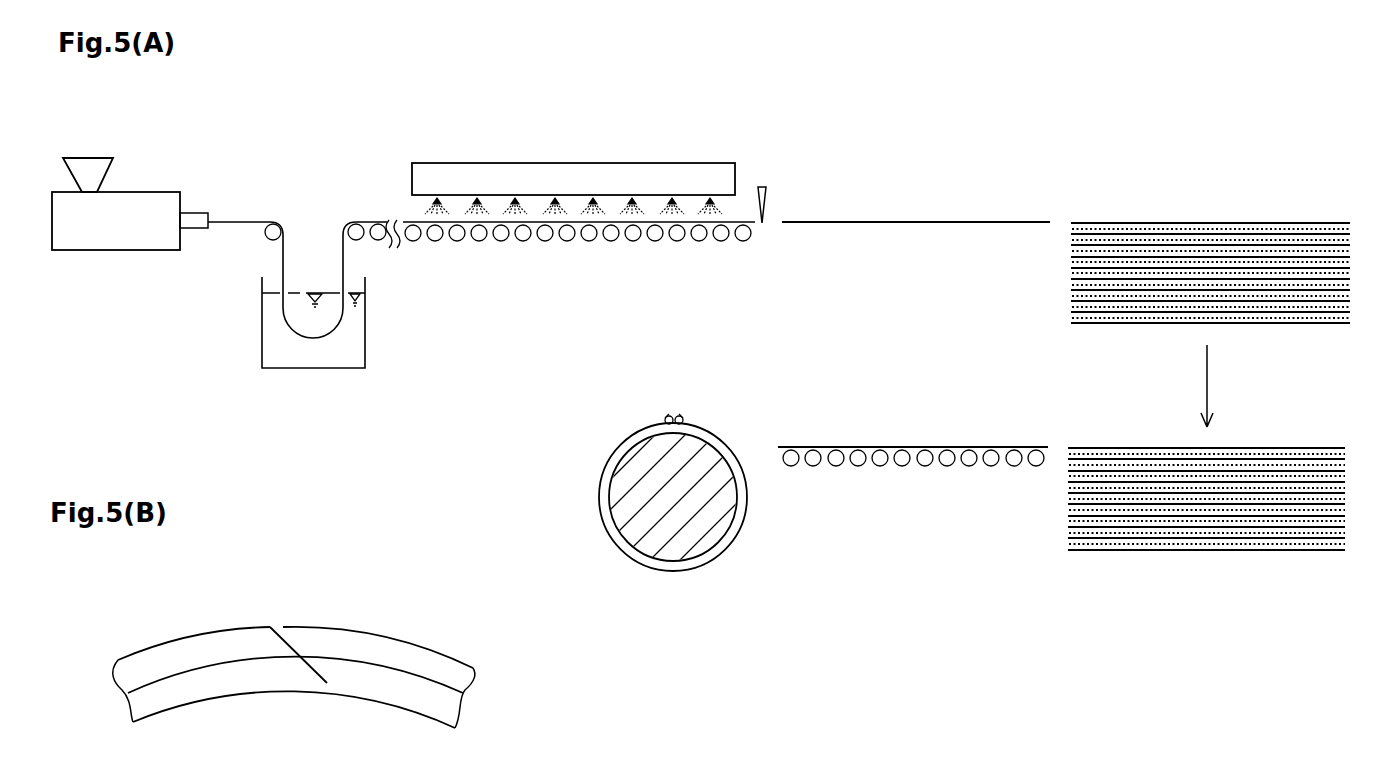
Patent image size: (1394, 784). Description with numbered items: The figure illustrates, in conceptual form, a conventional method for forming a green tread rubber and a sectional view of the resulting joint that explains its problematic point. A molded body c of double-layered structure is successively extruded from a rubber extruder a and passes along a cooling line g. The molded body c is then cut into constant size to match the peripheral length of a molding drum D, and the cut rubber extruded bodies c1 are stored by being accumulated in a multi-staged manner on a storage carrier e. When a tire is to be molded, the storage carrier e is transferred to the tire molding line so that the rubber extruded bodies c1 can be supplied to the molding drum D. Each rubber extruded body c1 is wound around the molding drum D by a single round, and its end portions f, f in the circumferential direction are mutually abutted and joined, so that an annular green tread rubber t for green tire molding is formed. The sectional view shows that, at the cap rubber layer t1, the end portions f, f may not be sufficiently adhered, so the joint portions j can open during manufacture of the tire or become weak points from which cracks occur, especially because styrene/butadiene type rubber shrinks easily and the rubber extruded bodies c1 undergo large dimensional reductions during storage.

In FIG. 5A, the rubber extruder a is at (163, 192).
In FIG. 5A, the molded body of double-layered structure c is at (240, 222).
In FIG. 5A, the cooling line g is at (605, 153).
In FIG. 5A, the rubber extruded body c1 is at (914, 222).
In FIG. 5A, the storage carrier e is at (1304, 214).
In FIG. 5A, the green tread rubber t is at (626, 444).
In FIG. 5A, the molding drum D is at (668, 510).
In FIG. 5A, the end portion f is at (668, 416).
In FIG. 5B, the end portion f is at (270, 630).
In FIG. 5A, the joint portion j is at (675, 407).
In FIG. 5B, the joint portion j is at (275, 611).
In FIG. 5B, the cap rubber layer t1 is at (423, 660).